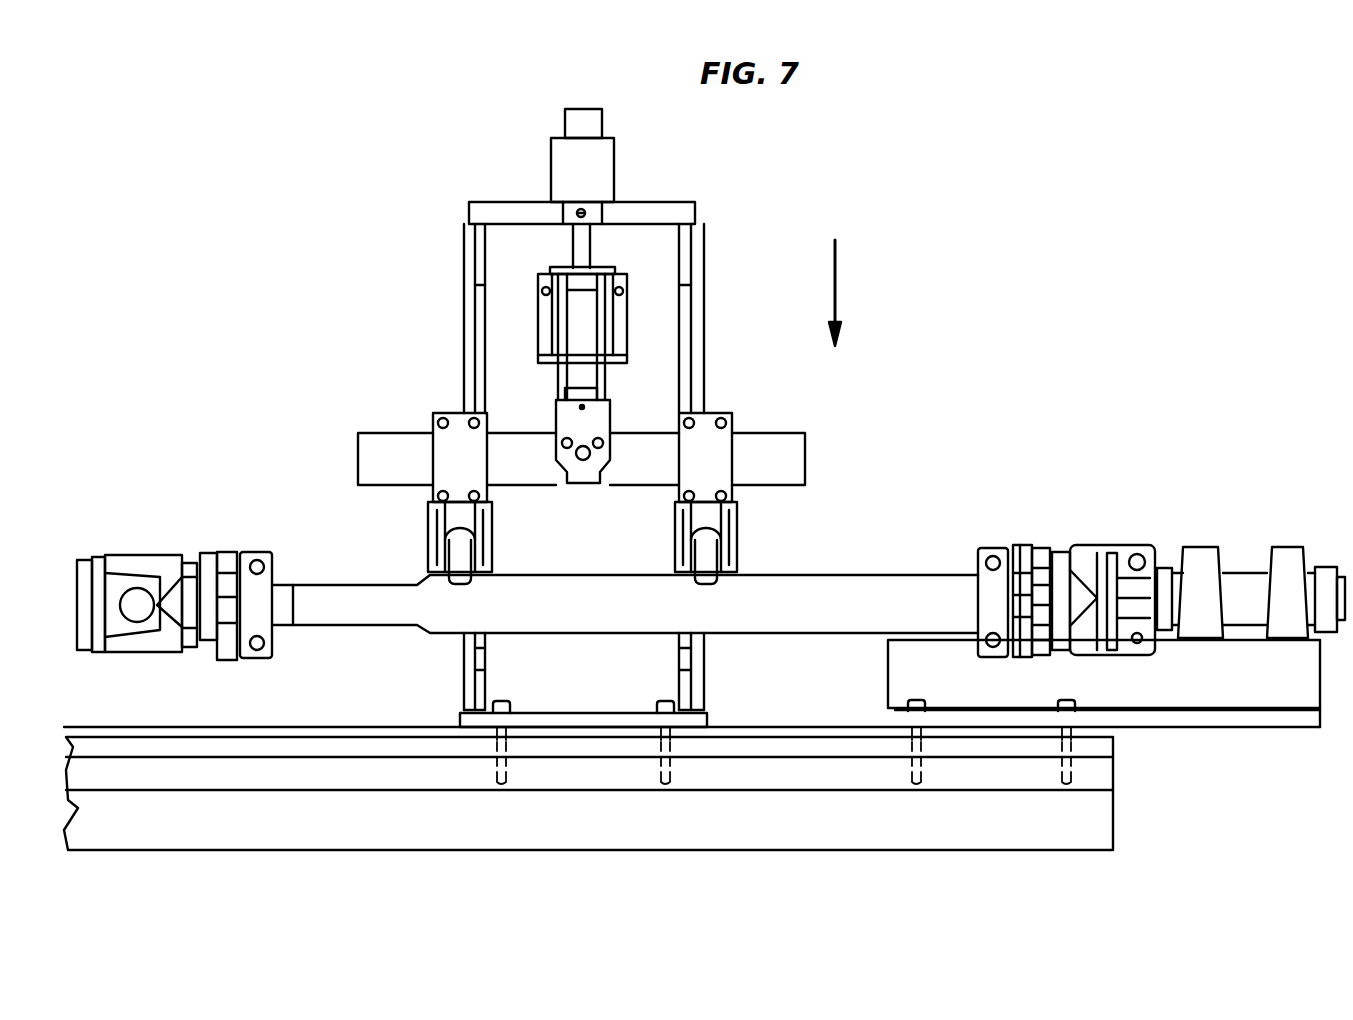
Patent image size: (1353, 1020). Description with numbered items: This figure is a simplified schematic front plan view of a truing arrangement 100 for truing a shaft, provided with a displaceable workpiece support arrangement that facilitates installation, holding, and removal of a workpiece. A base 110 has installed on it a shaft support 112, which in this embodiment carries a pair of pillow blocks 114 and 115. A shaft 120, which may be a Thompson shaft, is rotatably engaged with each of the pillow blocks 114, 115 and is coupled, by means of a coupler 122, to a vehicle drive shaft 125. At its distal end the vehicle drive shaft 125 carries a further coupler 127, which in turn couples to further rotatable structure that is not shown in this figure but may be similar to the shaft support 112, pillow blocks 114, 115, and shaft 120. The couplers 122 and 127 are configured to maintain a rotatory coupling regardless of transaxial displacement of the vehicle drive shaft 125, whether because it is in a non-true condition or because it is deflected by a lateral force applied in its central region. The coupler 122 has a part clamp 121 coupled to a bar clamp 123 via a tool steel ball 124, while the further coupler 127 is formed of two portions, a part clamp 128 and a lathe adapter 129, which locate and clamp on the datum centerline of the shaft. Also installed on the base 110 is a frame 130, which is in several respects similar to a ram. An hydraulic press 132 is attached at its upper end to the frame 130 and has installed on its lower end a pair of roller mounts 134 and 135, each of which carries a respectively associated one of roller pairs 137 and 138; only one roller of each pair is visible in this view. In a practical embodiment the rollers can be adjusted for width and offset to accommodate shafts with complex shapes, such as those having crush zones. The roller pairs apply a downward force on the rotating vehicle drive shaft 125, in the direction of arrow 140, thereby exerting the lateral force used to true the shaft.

The truing arrangement 100 is at (598, 914).
The base 110 is at (1103, 813).
The shaft support 112 is at (1230, 700).
The pillow block 114 is at (1200, 548).
The pillow block 115 is at (1290, 548).
The shaft 120 is at (1245, 630).
The part clamp 121 is at (978, 650).
The coupler 122 is at (1049, 562).
The bar clamp 123 is at (1127, 653).
The tool steel ball 124 is at (1063, 653).
The vehicle drive shaft 125 is at (862, 580).
The further coupler 127 is at (188, 527).
The part clamp 128 is at (270, 559).
The lathe adapter 129 is at (128, 555).
The frame 130 is at (697, 212).
The hydraulic press 132 is at (573, 273).
The roller mount 134 is at (438, 518).
The roller mount 135 is at (725, 518).
The roller pair 137 is at (467, 557).
The roller pair 138 is at (697, 560).
The arrow 140 is at (836, 296).